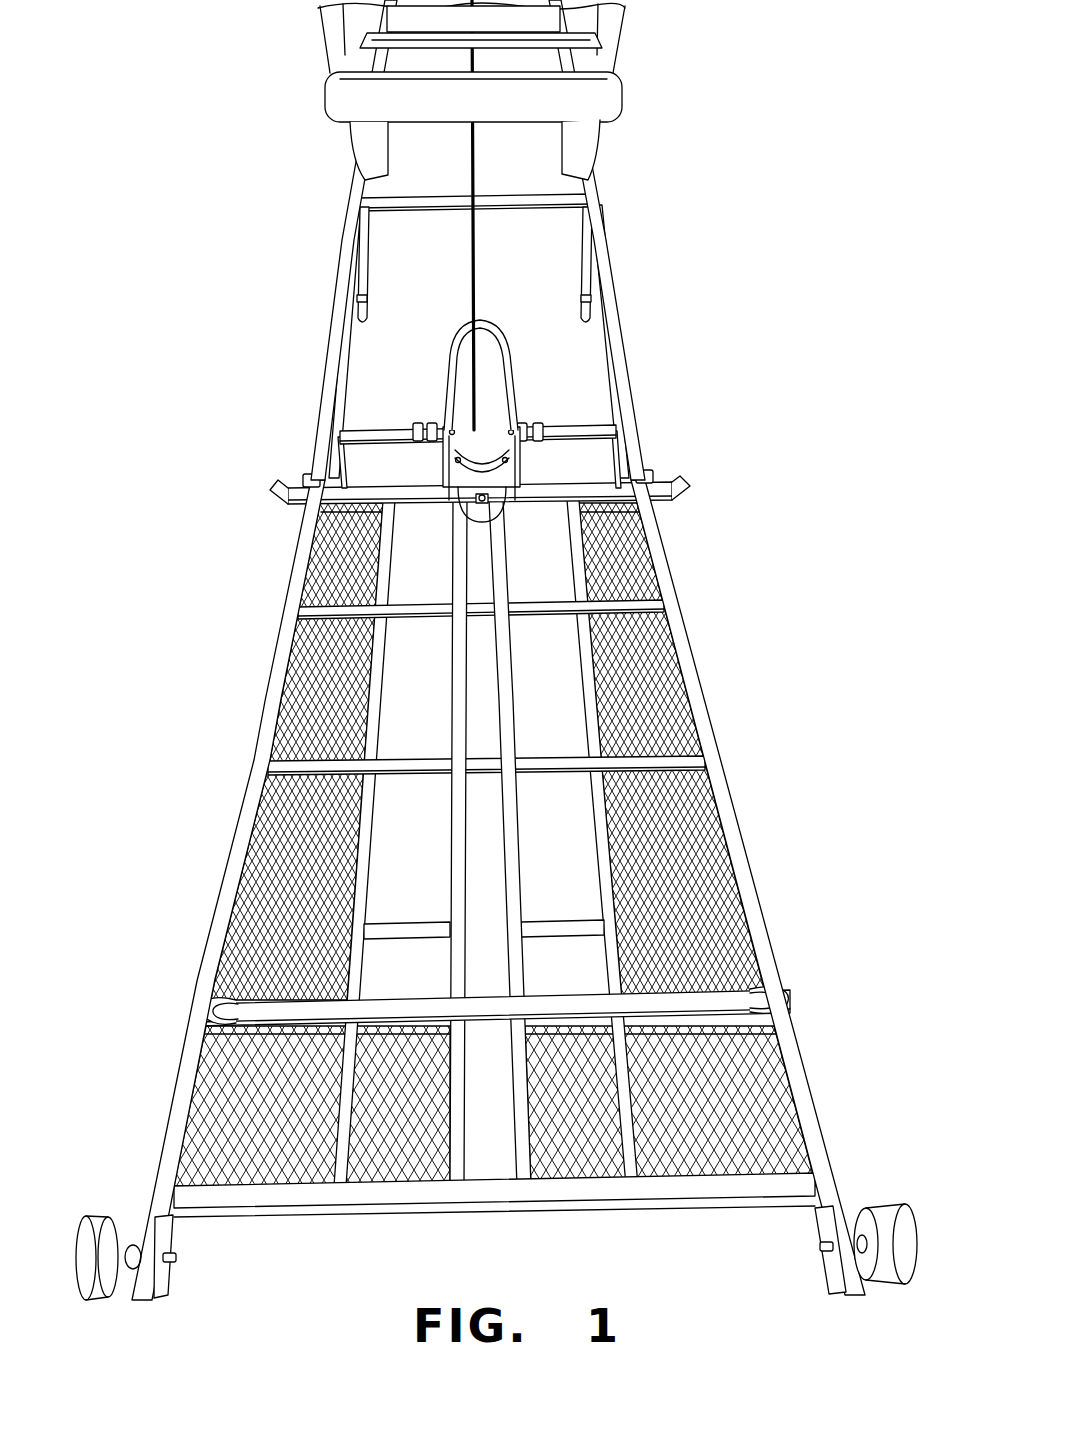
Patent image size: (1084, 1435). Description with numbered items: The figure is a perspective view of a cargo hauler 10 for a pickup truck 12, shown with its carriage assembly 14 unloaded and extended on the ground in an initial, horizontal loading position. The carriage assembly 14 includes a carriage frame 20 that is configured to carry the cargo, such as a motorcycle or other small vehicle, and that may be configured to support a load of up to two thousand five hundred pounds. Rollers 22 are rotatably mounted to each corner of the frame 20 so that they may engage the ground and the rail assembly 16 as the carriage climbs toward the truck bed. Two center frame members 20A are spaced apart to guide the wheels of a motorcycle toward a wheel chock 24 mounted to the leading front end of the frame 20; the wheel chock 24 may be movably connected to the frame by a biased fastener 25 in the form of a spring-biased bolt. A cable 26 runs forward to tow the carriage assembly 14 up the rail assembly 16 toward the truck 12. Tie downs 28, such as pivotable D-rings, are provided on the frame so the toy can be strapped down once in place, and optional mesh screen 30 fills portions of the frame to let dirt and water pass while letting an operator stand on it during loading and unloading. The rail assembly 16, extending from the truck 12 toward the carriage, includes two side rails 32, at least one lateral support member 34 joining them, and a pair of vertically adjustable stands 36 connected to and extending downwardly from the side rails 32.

The cargo hauler 10 is at (755, 522).
The pickup truck 12 is at (615, 37).
The carriage assembly 14 is at (484, 871).
The rail assembly 16 is at (497, 240).
The carriage frame 20 is at (740, 837).
The center frame members 20A is at (452, 838).
The rollers 22 is at (103, 1240).
The wheel chock 24 is at (512, 362).
The biased fastener 25 is at (487, 508).
The cable 26 is at (470, 233).
The tie downs 28 is at (205, 1013).
The mesh screen 30 is at (318, 690).
The side rails 32 is at (332, 318).
The lateral support member 34 is at (525, 207).
The vertically adjustable stands 36 is at (368, 283).